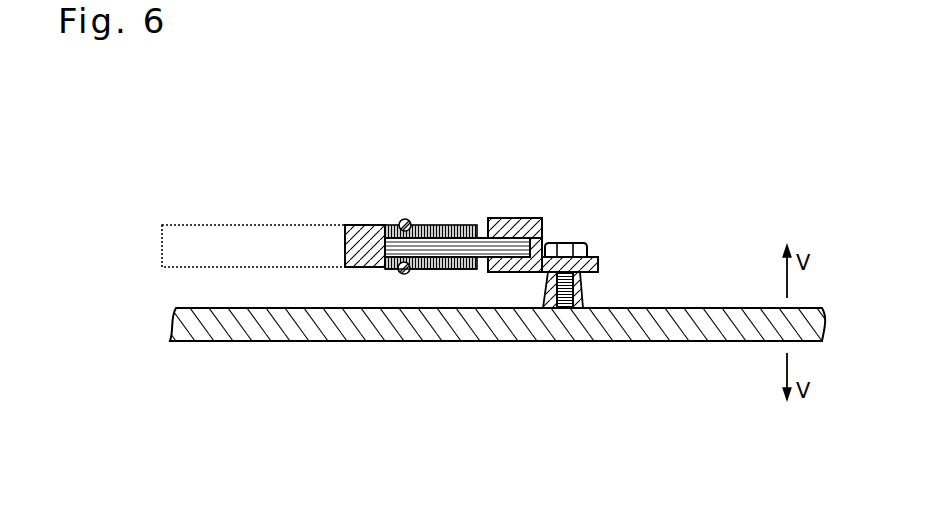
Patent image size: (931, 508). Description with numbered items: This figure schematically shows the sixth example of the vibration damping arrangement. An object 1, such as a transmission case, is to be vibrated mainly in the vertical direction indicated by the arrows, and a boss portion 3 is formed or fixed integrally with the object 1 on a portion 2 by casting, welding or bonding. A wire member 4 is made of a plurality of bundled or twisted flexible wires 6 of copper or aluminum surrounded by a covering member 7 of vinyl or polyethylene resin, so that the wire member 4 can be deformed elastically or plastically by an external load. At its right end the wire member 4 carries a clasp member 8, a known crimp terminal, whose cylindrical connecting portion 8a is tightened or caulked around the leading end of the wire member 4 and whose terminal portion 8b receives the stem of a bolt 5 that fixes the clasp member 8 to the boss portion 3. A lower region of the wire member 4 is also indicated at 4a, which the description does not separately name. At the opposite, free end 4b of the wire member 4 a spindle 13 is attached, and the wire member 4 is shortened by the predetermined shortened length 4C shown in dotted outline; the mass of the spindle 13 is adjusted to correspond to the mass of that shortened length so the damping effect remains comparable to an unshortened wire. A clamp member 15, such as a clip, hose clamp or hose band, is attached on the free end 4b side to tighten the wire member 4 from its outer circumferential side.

The object 1 is at (347, 325).
The portion 2 is at (525, 350).
The boss portion 3 is at (585, 300).
The wire member 4 is at (458, 188).
The lower surface of circuit board 4a is at (470, 277).
The free end 4b is at (388, 279).
The predetermined shortened length 4C is at (250, 240).
The bolt 5 is at (566, 243).
The wires 6 is at (483, 238).
The covering member 7 is at (428, 225).
The clasp member 8 is at (543, 210).
The cylindrical connecting portion 8a is at (515, 218).
The terminal portion 8b is at (594, 258).
The spindle 13 is at (363, 225).
The clamp member 15 is at (404, 219).